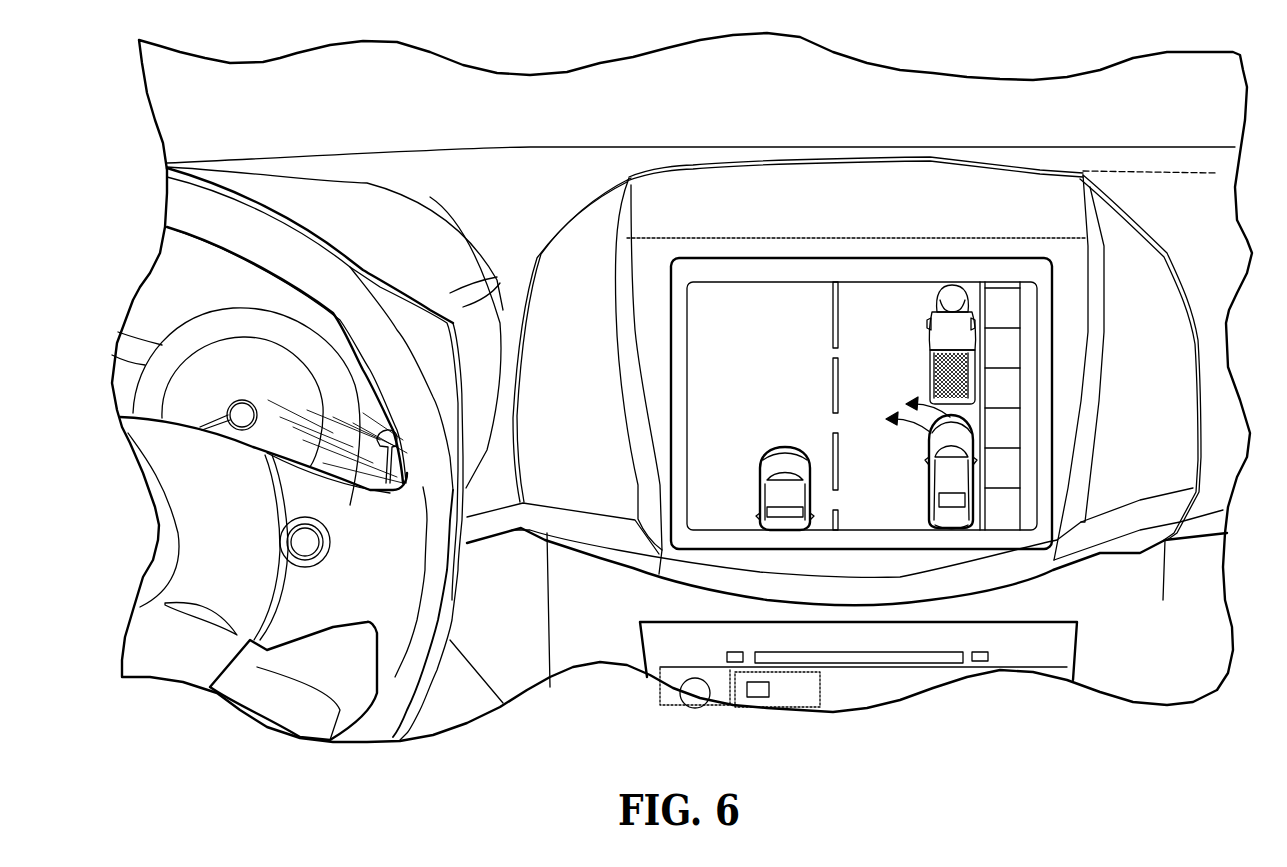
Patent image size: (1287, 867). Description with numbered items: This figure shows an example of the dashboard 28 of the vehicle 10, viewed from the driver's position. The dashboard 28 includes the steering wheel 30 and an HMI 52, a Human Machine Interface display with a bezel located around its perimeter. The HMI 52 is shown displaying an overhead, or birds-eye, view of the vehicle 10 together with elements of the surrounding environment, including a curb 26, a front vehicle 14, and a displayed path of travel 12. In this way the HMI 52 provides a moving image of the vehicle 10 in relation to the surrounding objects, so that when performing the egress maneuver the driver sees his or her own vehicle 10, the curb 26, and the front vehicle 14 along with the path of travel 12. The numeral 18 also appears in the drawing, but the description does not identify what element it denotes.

The vehicle 10 is at (927, 477).
The displayed path of travel 12 is at (928, 405).
The front vehicle 14 is at (927, 340).
The display screen 18 is at (967, 258).
The curb 26 is at (982, 438).
The dashboard 28 is at (892, 128).
The steering wheel 30 is at (323, 267).
The HMI 52 is at (778, 323).